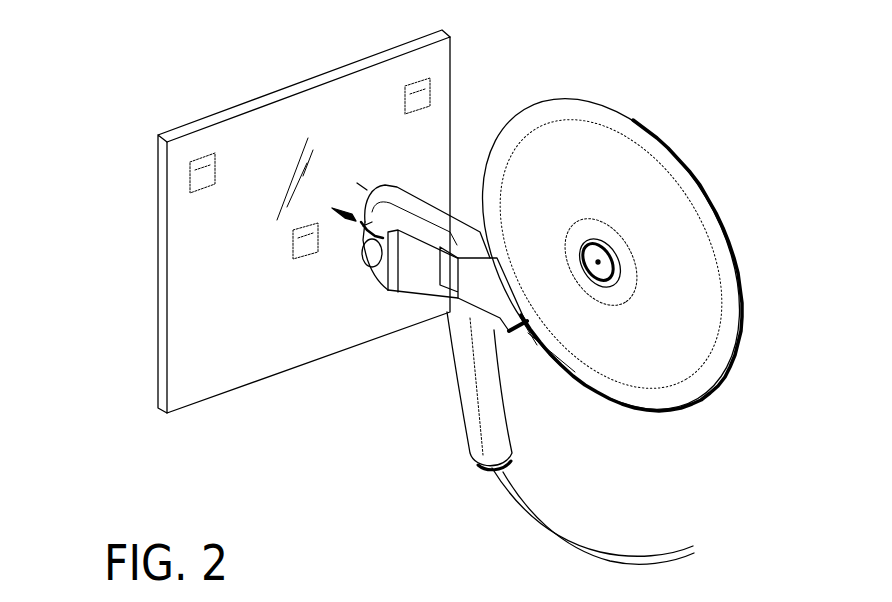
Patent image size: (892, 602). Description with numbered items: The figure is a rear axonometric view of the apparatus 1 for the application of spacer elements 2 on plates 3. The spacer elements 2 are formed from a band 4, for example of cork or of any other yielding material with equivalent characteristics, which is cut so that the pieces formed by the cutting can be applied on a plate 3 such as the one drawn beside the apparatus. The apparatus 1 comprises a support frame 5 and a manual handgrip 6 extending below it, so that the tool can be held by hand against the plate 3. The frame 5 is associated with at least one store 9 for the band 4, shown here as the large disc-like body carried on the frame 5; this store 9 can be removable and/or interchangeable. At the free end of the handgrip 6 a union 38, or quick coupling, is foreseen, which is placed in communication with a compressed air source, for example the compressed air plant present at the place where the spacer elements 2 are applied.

The apparatus 1 is at (682, 127).
The spacer elements 2 is at (200, 180).
The plate 3 is at (248, 127).
The band 4 is at (523, 338).
The support frame 5 is at (432, 220).
The manual handgrip 6 is at (470, 401).
The store for the band 9 is at (743, 225).
The union 38 is at (495, 478).